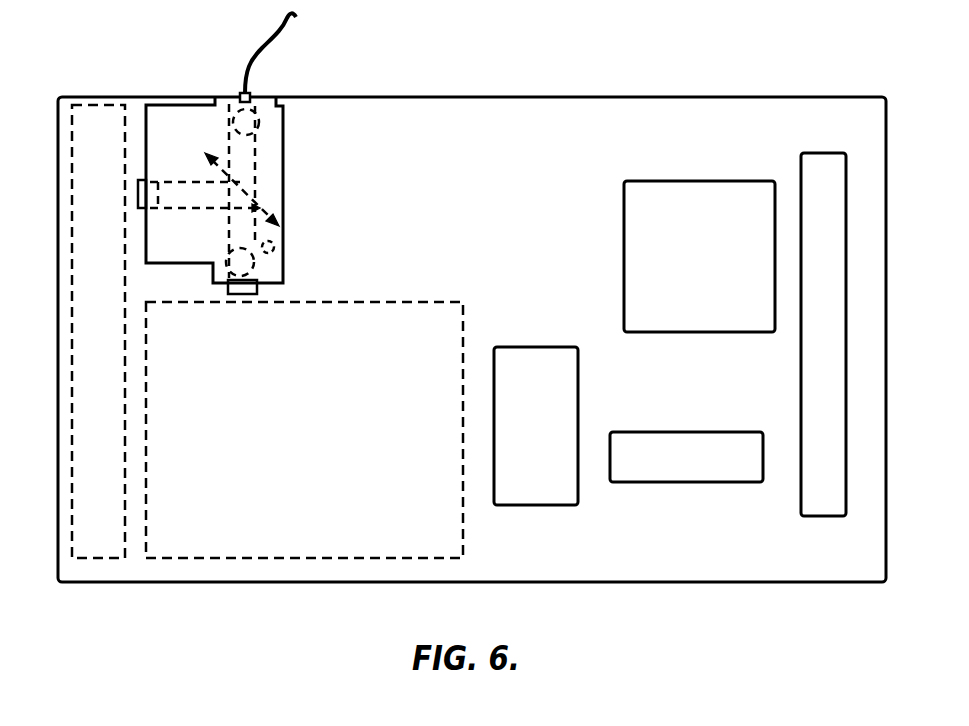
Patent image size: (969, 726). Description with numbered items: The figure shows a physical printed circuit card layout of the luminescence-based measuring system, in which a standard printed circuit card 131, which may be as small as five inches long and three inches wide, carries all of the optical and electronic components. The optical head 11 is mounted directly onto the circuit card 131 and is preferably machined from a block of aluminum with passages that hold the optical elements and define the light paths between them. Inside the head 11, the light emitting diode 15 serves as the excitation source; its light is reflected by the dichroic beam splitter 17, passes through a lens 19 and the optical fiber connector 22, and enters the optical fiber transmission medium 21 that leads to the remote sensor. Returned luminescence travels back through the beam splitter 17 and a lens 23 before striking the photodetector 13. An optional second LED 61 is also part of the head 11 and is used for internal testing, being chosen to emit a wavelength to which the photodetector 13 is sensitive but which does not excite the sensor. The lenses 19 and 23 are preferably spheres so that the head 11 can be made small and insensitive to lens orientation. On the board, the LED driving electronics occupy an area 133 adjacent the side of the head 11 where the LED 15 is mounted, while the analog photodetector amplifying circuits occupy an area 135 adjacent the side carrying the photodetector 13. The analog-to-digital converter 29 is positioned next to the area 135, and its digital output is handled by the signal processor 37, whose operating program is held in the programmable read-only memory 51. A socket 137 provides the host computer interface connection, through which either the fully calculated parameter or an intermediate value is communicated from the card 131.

The optical head 11 is at (287, 106).
The photodetector 13 is at (228, 288).
The light emitting diode 15 is at (146, 178).
The dichroic beam splitter 17 is at (210, 158).
The lens 19 is at (283, 268).
The optical fiber transmission medium 21 is at (260, 48).
The optical fiber connector 22 is at (251, 94).
The lens 23 is at (230, 100).
The analog-to-digital converter 29 is at (557, 347).
The signal processor 37 is at (745, 181).
The programmable read-only memory 51 is at (725, 432).
The second LED 61 is at (274, 246).
The printed circuit card 131 is at (876, 97).
The area 133 is at (75, 206).
The area 135 is at (424, 302).
The socket 137 is at (842, 153).